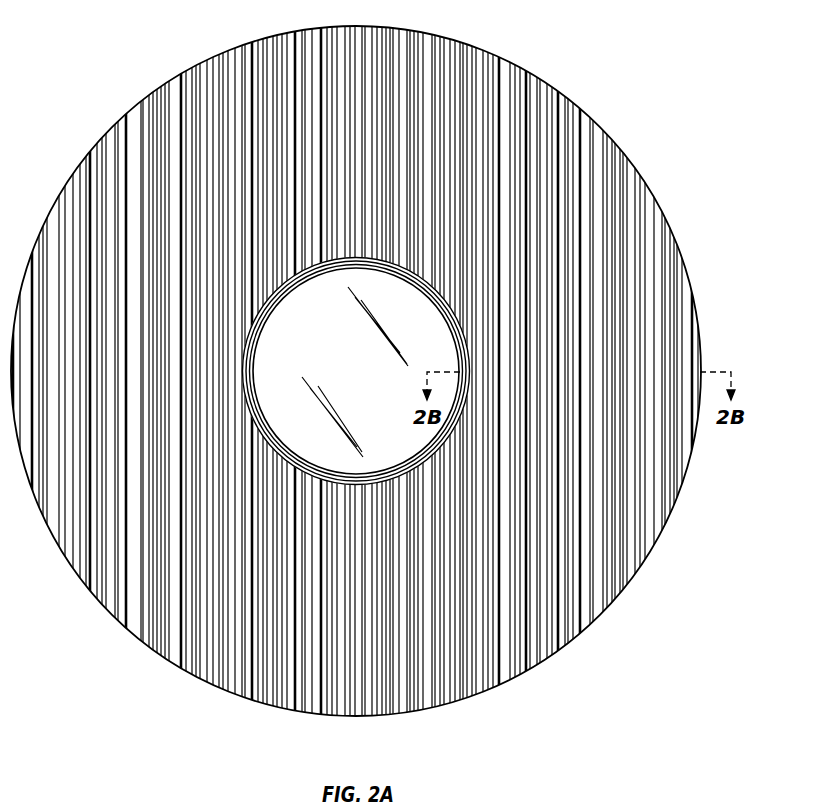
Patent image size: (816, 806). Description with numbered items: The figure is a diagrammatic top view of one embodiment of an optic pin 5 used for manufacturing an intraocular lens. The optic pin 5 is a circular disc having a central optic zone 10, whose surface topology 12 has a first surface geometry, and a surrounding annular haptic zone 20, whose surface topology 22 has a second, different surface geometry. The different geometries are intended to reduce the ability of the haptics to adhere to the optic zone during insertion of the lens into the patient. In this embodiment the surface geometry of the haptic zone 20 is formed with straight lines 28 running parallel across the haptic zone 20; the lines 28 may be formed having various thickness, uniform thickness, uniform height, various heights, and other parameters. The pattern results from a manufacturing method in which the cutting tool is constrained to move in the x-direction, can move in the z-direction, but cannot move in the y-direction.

The optic pin 5 is at (374, 361).
The optic zone 10 is at (416, 314).
The surface topology 12 is at (321, 340).
The haptic zone 20 is at (375, 370).
The surface topology 22 is at (438, 133).
The straight lines 28 is at (355, 33).